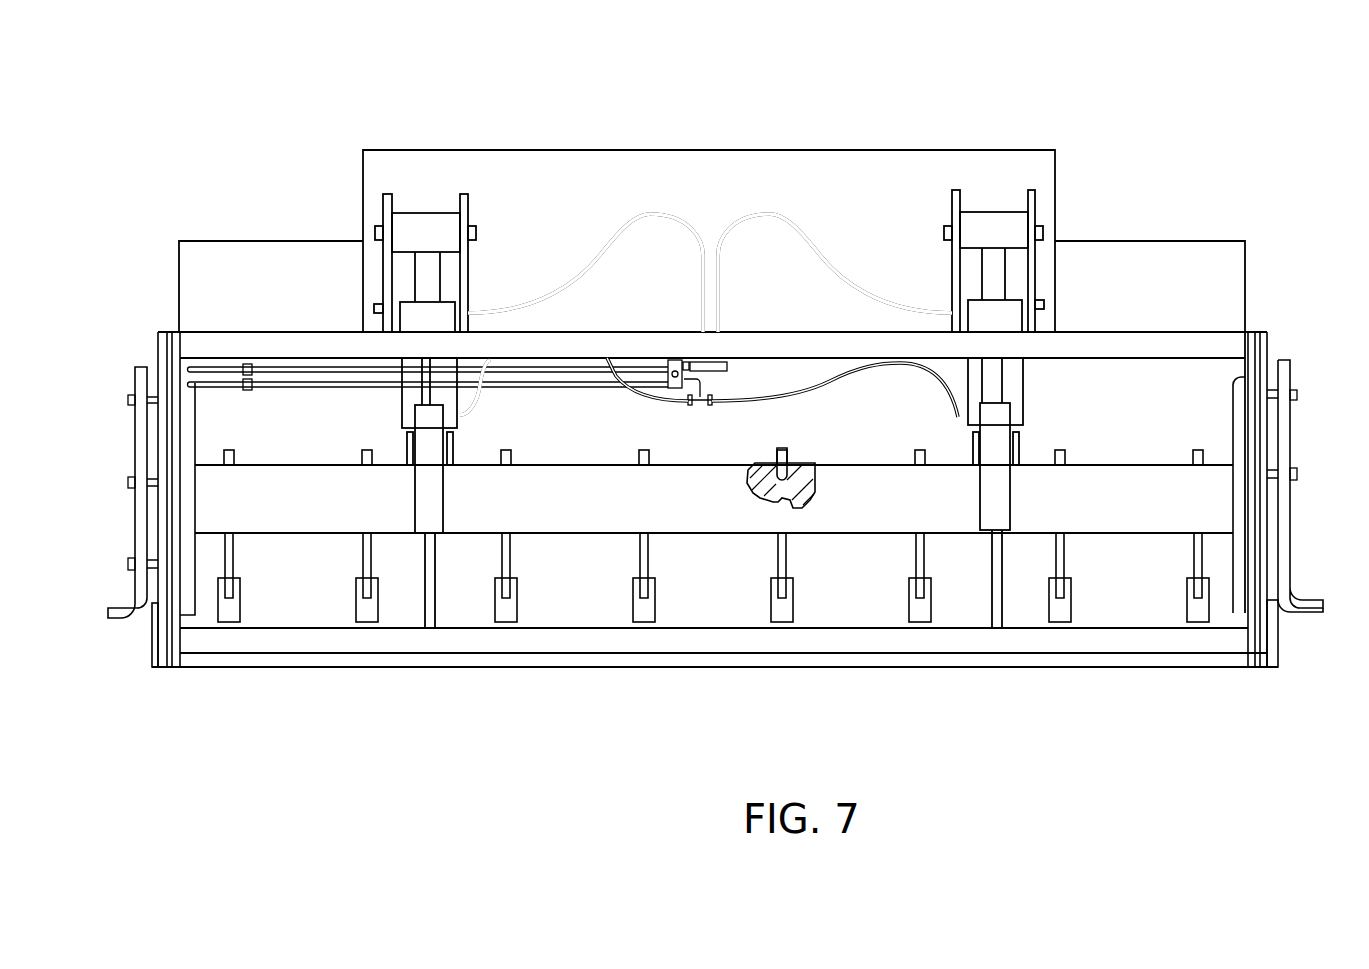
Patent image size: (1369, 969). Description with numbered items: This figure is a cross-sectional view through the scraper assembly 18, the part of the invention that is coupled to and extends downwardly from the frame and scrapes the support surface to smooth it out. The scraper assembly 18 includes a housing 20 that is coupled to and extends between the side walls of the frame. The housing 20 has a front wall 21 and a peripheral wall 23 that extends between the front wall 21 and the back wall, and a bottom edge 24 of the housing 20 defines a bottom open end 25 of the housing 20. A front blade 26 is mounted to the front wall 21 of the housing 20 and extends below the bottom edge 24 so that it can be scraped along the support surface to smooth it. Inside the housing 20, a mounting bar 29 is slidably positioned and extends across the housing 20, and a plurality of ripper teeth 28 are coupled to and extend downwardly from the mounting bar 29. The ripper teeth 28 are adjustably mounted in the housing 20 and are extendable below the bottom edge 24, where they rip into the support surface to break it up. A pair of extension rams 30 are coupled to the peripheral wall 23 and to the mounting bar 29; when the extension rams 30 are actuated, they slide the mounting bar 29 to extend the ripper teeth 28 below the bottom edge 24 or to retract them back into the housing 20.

The scraper assembly 18 is at (1055, 150).
The housing 20 is at (1126, 242).
The front wall 21 is at (1180, 388).
The peripheral wall 23 is at (1258, 430).
The bottom edge 24 is at (1045, 657).
The bottom open end 25 is at (1130, 645).
The front blade 26 is at (1228, 662).
The ripper teeth 28 is at (367, 622).
The mounting bar 29 is at (287, 490).
The extension ram 30 is at (426, 265).